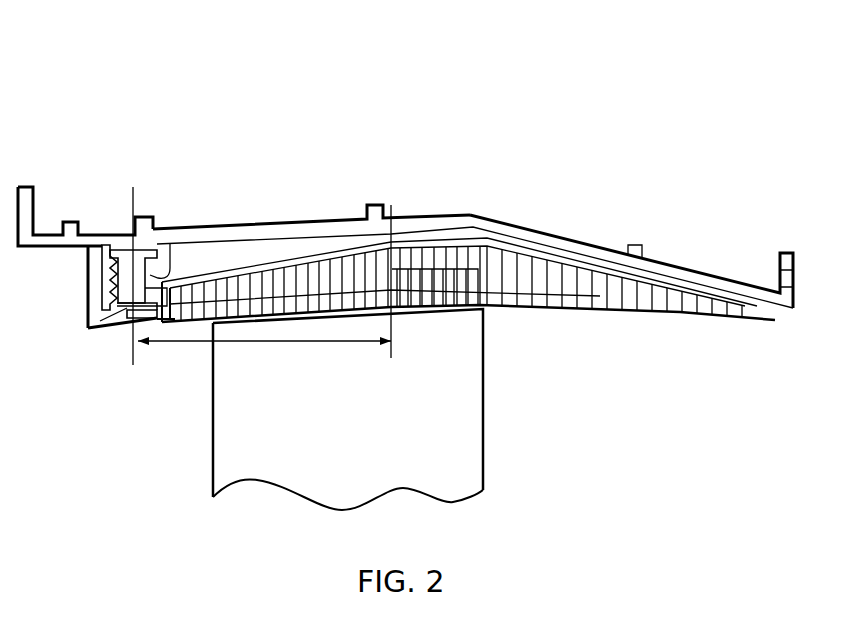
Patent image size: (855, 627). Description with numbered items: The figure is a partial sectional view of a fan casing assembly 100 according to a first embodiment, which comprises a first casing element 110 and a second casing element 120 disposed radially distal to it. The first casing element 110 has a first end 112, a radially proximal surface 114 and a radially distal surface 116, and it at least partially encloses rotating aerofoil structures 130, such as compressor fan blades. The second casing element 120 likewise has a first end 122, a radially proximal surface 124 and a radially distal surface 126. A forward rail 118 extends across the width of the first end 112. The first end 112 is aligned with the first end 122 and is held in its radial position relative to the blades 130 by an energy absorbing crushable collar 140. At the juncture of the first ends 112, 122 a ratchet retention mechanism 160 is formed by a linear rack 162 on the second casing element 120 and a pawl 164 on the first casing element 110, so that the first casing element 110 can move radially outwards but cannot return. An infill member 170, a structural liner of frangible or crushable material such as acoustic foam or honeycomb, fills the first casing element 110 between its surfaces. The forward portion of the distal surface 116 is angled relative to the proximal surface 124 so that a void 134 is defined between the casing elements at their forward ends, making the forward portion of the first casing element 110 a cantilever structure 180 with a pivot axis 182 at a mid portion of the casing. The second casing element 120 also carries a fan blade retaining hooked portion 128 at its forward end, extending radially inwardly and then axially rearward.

The fan casing assembly 100 is at (363, 136).
The first casing element 110 is at (598, 308).
The first end 112 is at (165, 321).
The radially proximal surface 114 is at (538, 308).
The radially distal surface 116 is at (505, 242).
The forward rail 118 is at (100, 323).
The second casing element 120 is at (578, 242).
The first end 122 is at (123, 328).
The radially proximal surface 124 is at (245, 241).
The radially distal surface 126 is at (294, 220).
The hooked portion 128 is at (147, 329).
The rotating aerofoil structures 130 is at (400, 426).
The void 134 is at (232, 268).
The crushable collar 140 is at (152, 268).
The ratchet retention mechanism 160 is at (100, 275).
The linear rack 162 is at (107, 248).
The pawl 164 is at (110, 302).
The infill member 170 is at (532, 265).
The cantilever structure 180 is at (264, 353).
The pivot axis 182 is at (393, 232).